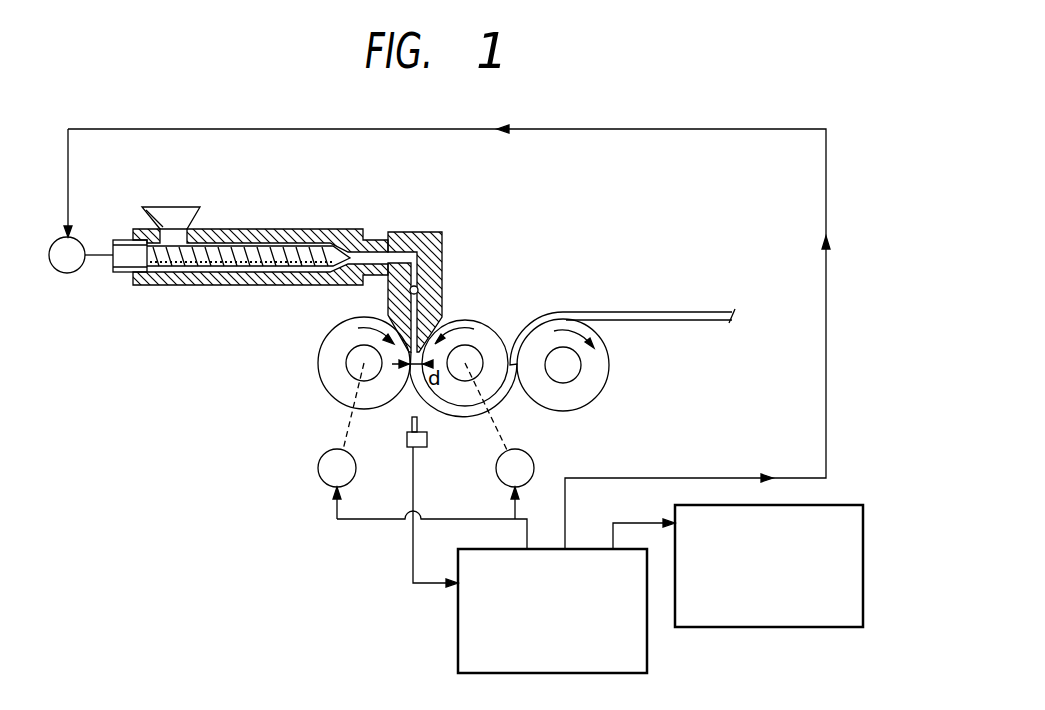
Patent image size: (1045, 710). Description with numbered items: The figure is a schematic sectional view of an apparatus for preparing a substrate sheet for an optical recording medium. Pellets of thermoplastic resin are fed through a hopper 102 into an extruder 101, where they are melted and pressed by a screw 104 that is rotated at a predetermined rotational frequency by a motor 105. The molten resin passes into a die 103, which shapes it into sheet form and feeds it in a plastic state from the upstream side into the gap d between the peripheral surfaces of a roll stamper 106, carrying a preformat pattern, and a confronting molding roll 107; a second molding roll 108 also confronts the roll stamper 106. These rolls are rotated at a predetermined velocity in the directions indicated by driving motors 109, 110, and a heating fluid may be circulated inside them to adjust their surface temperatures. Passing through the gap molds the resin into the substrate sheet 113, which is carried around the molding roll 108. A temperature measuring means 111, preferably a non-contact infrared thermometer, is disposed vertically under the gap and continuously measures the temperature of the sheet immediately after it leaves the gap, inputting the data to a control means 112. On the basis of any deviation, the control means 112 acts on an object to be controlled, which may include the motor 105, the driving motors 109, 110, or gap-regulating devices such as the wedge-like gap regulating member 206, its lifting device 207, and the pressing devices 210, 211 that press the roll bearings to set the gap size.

The extruder 101 is at (302, 229).
The hopper 102 is at (198, 213).
The die 103 is at (408, 232).
The screw 104 is at (247, 248).
The motor 105 is at (68, 274).
The roll stamper 106 is at (478, 325).
The molding roll 107 is at (319, 370).
The molding roll 108 is at (607, 378).
The driving motor 109 is at (533, 461).
The driving motor 110 is at (322, 479).
The temperature measuring means 111 is at (427, 447).
The control means 112 is at (458, 638).
The substrate sheet 113 is at (665, 312).
The wedge-like gap regulating member 206 is at (787, 593).
The lifting device 207 is at (787, 593).
The pressing device 210 is at (787, 593).
The pressing device 211 is at (717, 627).